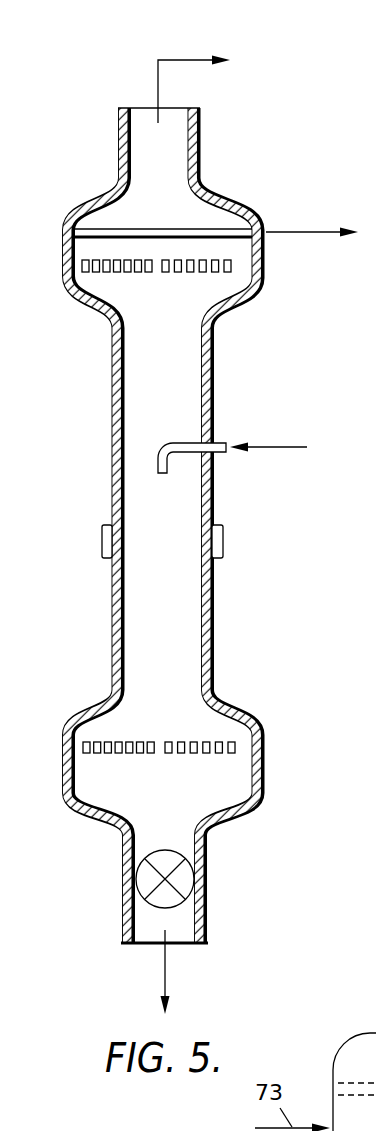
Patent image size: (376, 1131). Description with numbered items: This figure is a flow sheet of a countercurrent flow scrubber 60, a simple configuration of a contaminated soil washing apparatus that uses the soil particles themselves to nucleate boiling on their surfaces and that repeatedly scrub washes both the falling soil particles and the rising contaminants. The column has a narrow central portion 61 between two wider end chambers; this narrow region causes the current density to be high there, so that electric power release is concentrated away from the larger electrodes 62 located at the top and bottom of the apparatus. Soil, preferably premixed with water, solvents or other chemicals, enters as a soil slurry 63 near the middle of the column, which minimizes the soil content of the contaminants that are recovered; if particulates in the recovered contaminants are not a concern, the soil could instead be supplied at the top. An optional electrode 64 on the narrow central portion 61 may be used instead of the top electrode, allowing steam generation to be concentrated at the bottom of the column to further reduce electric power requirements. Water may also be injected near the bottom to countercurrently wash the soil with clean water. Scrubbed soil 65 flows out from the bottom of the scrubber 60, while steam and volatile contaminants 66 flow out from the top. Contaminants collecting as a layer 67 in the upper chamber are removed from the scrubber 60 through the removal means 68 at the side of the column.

The countercurrent flow scrubber 60 is at (189, 525).
The narrow central portion 61 is at (112, 477).
The electrodes 62 is at (138, 276).
The soil slurry 63 is at (281, 445).
The optional electrode 64 is at (223, 540).
The scrubbed soil 65 is at (162, 965).
The steam and volatile contaminants 66 is at (176, 60).
The contaminant layer 67 is at (173, 227).
The contaminant removal means 68 is at (280, 232).